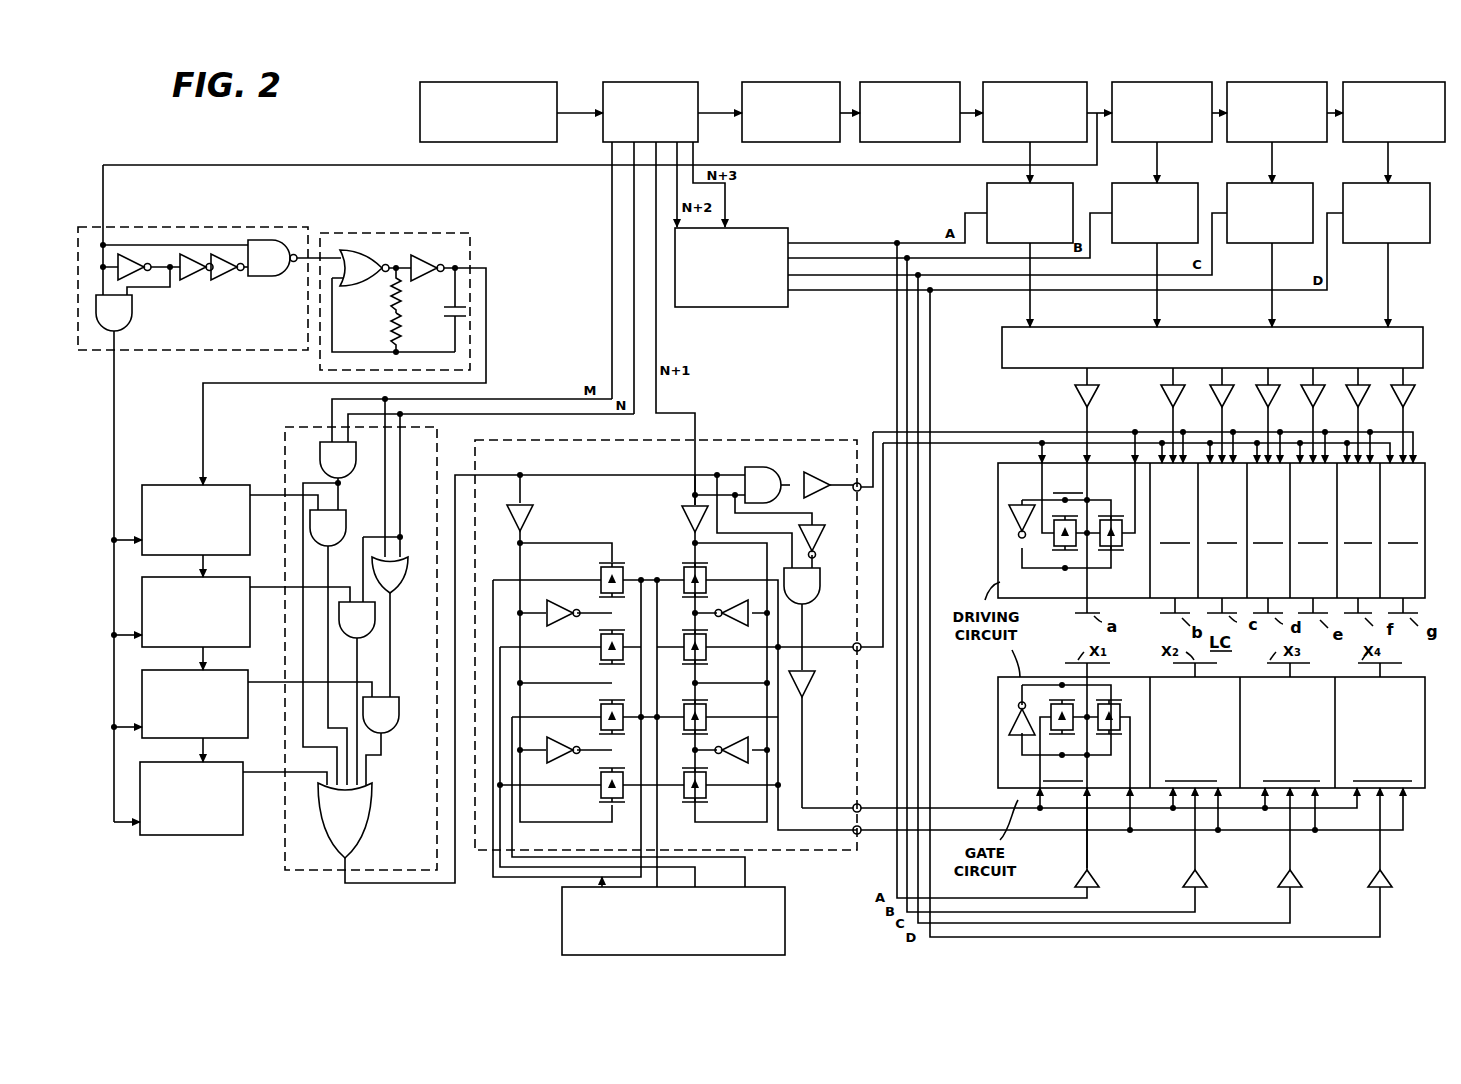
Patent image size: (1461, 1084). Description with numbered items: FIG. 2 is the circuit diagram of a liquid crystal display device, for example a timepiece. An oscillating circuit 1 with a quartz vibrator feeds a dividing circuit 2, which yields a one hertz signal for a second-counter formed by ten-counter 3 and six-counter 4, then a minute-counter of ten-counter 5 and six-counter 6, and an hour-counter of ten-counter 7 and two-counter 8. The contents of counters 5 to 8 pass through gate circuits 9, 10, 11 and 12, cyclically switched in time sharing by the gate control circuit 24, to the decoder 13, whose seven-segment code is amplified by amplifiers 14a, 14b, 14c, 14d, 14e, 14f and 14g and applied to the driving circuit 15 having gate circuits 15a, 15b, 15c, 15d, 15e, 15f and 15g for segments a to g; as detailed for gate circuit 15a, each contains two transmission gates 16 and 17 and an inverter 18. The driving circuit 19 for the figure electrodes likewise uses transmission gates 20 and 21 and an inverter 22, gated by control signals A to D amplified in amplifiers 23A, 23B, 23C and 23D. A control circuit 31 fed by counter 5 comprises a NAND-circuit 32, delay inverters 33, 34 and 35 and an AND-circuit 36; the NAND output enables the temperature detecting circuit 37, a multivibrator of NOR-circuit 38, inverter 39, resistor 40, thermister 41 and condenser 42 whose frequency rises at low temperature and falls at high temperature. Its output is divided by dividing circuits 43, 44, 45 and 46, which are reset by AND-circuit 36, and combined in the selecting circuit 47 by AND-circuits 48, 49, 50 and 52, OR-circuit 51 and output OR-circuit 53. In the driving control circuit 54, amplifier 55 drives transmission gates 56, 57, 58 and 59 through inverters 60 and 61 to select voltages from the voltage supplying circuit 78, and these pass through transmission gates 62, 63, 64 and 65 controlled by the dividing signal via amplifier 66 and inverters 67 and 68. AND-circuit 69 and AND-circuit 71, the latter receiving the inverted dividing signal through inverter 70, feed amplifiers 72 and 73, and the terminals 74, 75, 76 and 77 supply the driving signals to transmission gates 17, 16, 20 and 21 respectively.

The oscillating circuit 1 is at (511, 80).
The dividing circuit 2 is at (662, 82).
The 10-counter 3 is at (802, 82).
The 6-counter 4 is at (923, 82).
The 10-counter 5 is at (1044, 82).
The 6-counter 6 is at (1178, 82).
The 10-counter 7 is at (1288, 82).
The 2-counter 8 is at (1408, 82).
The gate circuit 9 is at (987, 191).
The gate circuit 10 is at (1167, 184).
The gate circuit 11 is at (1284, 184).
The gate circuit 12 is at (1400, 184).
The decoder 13 is at (1002, 350).
The amplifier 14a is at (1084, 396).
The amplifier 14b is at (1164, 390).
The amplifier 14c is at (1212, 390).
The amplifier 14d is at (1258, 390).
The amplifier 14e is at (1303, 390).
The amplifier 14f is at (1348, 390).
The amplifier 14g is at (1413, 405).
The driving circuit 15 is at (1211, 554).
The gate circuit 15a is at (1067, 484).
The gate circuit 15b is at (1175, 534).
The gate circuit 15c is at (1222, 534).
The gate circuit 15d is at (1268, 534).
The gate circuit 15e is at (1312, 534).
The gate circuit 15f is at (1358, 534).
The gate circuit 15g is at (1403, 534).
The transmission gate 16 is at (1057, 558).
The transmission gate 17 is at (1126, 555).
The inverter 18 is at (1012, 515).
The driving circuit 19 is at (997, 688).
The transmission gate 20 is at (1088, 725).
The transmission gate 21 is at (1117, 740).
The inverter 22 is at (1006, 722).
The amplifier 23A is at (1094, 878).
The amplifier 23B is at (1202, 878).
The amplifier 23C is at (1298, 878).
The amplifier 23D is at (1389, 878).
The gate control circuit 24 is at (759, 307).
The control circuit 31 is at (244, 227).
The NAND-circuit 32 is at (278, 276).
The inverter 33 is at (128, 272).
The inverter 34 is at (188, 274).
The inverter 35 is at (223, 270).
The AND-circuit 36 is at (128, 312).
The temperature detecting circuit 37 is at (466, 246).
The NOR-circuit 38 is at (363, 251).
The inverter 39 is at (415, 260).
The resistor 40 is at (392, 301).
The thermister 41 is at (387, 340).
The condenser 42 is at (443, 313).
The dividing circuit 43 is at (183, 484).
The dividing circuit 44 is at (248, 577).
The dividing circuit 45 is at (246, 670).
The dividing circuit 46 is at (242, 762).
The selecting circuit 47 is at (306, 905).
The AND-circuit 48 is at (320, 444).
The AND-circuit 49 is at (344, 520).
The AND-circuit 50 is at (375, 634).
The OR-circuit 51 is at (404, 592).
The AND-circuit 52 is at (387, 736).
The OR-circuit 53 is at (372, 818).
The driving control circuit 54 is at (835, 441).
The amplifier 55 is at (532, 508).
The transmission gate 56 is at (602, 574).
The transmission gate 57 is at (602, 654).
The transmission gate 58 is at (602, 712).
The transmission gate 59 is at (602, 792).
The inverter 60 is at (550, 618).
The inverter 61 is at (550, 755).
The transmission gate 62 is at (706, 574).
The transmission gate 63 is at (704, 654).
The transmission gate 64 is at (706, 712).
The transmission gate 65 is at (704, 792).
The amplifier 66 is at (683, 512).
The inverter 67 is at (747, 620).
The inverter 68 is at (743, 748).
The AND-circuit 69 is at (752, 470).
The inverter 70 is at (818, 544).
The AND-circuit 71 is at (818, 604).
The amplifier 72 is at (814, 474).
The amplifier 73 is at (812, 703).
The terminal 74 is at (858, 502).
The terminal 75 is at (811, 676).
The terminal 76 is at (852, 805).
The terminal 77 is at (858, 834).
The voltage supplying circuit 78 is at (562, 922).